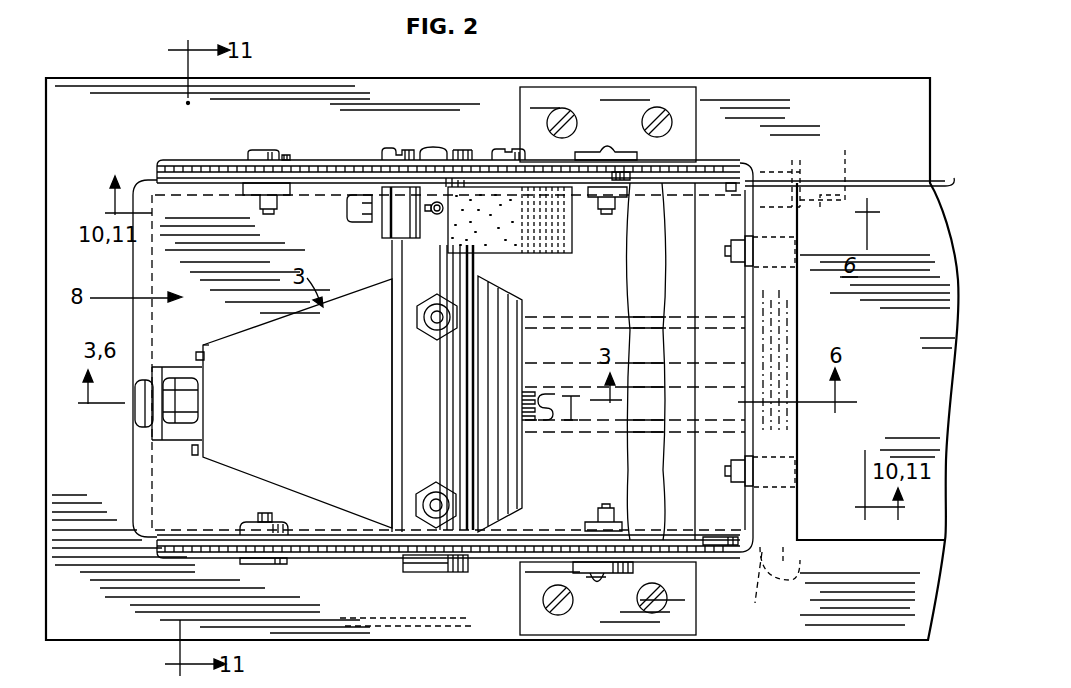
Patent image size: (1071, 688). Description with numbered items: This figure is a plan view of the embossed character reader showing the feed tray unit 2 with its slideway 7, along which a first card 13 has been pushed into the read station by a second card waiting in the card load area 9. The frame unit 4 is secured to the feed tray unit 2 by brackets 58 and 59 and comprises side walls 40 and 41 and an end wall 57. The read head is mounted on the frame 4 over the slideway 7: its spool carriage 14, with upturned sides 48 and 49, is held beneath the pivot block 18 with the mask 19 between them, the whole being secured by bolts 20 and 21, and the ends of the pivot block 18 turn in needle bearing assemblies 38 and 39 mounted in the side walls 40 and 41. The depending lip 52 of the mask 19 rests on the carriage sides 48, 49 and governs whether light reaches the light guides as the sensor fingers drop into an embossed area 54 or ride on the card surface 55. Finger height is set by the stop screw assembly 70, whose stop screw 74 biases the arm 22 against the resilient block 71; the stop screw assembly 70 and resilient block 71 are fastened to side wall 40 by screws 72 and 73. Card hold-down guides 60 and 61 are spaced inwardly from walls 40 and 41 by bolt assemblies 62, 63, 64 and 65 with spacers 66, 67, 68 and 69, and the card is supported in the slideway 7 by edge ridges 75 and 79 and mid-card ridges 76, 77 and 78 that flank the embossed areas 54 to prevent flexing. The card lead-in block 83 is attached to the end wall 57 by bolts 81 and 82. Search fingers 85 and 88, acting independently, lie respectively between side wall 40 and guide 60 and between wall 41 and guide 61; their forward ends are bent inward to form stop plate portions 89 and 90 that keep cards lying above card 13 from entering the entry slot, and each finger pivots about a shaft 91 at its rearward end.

The feed tray unit 2 is at (852, 80).
The frame unit 4 is at (311, 555).
The slideway 7 is at (852, 172).
The card load area 9 is at (905, 230).
The first card 13 is at (549, 318).
The spool carriage 14 is at (183, 370).
The pivot block 18 is at (444, 410).
The mask 19 is at (334, 407).
The bolt 20 is at (438, 492).
The bolt 21 is at (440, 338).
The arm 22 is at (441, 201).
The needle bearing assembly 38 is at (440, 147).
The needle bearing assembly 39 is at (420, 573).
The side wall 40 is at (335, 160).
The side wall 41 is at (345, 560).
The upturned side 48 is at (194, 456).
The upturned side 49 is at (196, 352).
The depending lip 52 is at (206, 350).
The embossed area 54 is at (538, 392).
The card surface 55 is at (572, 392).
The end wall 57 is at (750, 328).
The bracket 58 is at (668, 105).
The bracket 59 is at (661, 625).
The card hold-down guide 60 is at (732, 192).
The card hold-down guide 61 is at (729, 537).
The bolt assembly 62 is at (608, 140).
The bolt assembly 63 is at (598, 582).
The bolt assembly 64 is at (260, 160).
The bolt assembly 65 is at (258, 564).
The spacer 66 is at (625, 180).
The spacer 67 is at (622, 550).
The spacer 68 is at (292, 162).
The spacer 69 is at (275, 533).
The stop screw assembly 70 is at (401, 212).
The resilient block 71 is at (484, 231).
The screw 72 is at (385, 150).
The screw 73 is at (503, 149).
The stop screw 74 is at (347, 212).
The edge slideway ridge 75 is at (640, 196).
The mid-card ridge 76 is at (650, 316).
The mid-card ridge 77 is at (655, 385).
The mid-card ridge 78 is at (653, 422).
The edge slideway ridge 79 is at (636, 534).
The bolt 81 is at (778, 240).
The bolt 82 is at (771, 460).
The card lead-in block 83 is at (763, 339).
The search finger 85 is at (827, 167).
The search finger 88 is at (792, 580).
The stop plate portion 89 is at (806, 160).
The stop plate portion 90 is at (747, 584).
The shaft 91 is at (925, 403).